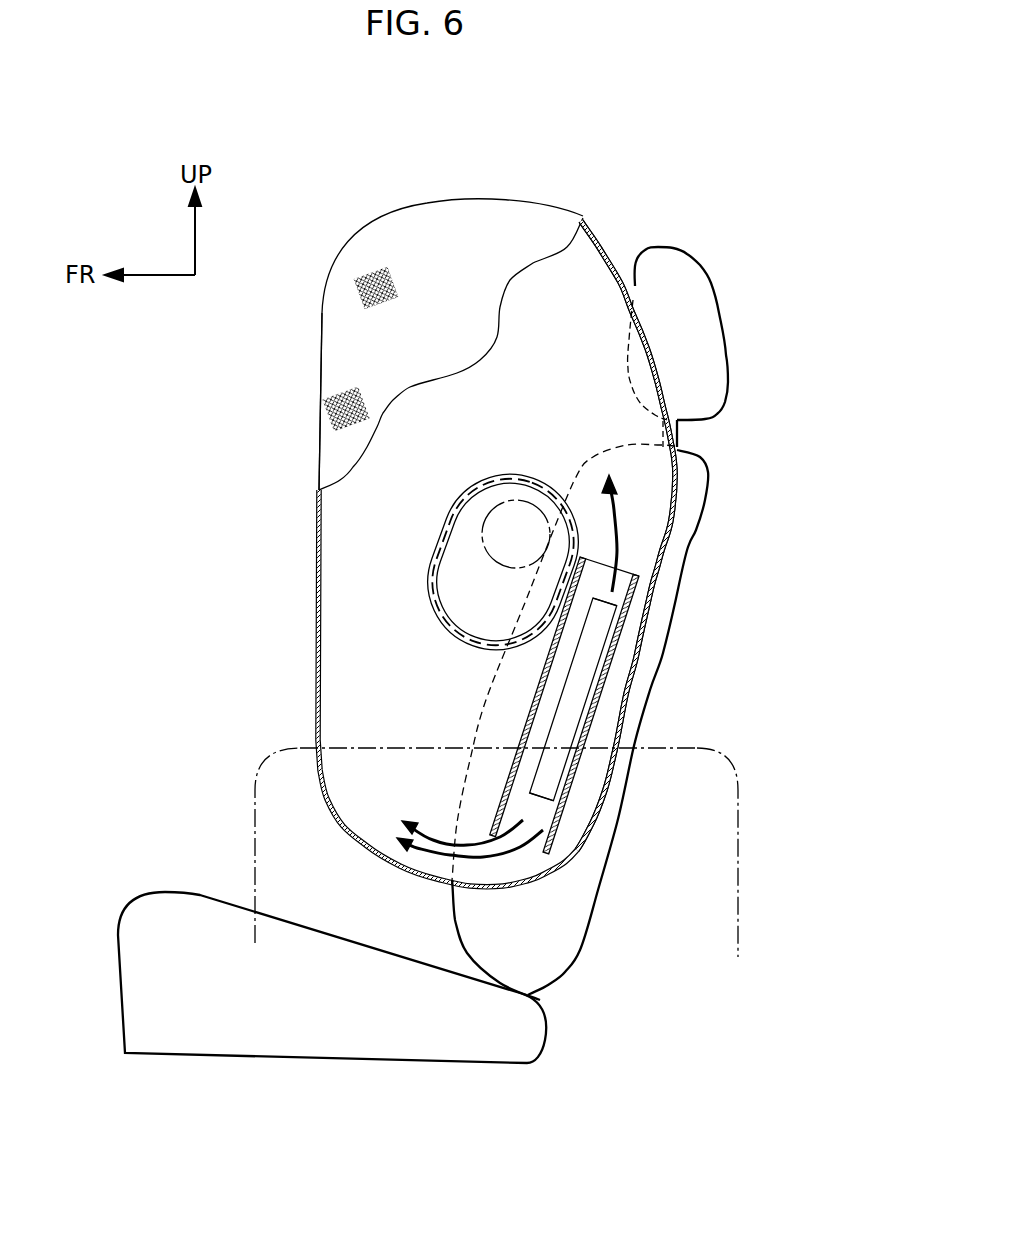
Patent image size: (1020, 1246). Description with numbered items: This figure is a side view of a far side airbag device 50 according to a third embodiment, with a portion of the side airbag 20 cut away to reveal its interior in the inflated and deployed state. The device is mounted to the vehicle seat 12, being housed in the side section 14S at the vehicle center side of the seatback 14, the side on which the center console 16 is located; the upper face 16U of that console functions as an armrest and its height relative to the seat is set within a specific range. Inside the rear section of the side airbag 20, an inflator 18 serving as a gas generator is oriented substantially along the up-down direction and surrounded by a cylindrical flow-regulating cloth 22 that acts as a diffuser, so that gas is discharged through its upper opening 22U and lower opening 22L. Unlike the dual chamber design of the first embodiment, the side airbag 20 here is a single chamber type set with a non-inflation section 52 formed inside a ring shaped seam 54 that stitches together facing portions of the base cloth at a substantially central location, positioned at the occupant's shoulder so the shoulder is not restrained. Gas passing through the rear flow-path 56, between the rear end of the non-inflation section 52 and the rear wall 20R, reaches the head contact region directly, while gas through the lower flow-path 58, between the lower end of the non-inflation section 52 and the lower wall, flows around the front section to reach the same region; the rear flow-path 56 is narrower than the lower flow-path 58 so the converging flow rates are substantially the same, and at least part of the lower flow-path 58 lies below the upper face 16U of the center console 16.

The vehicle seat 12 is at (563, 1036).
The seatback 14 is at (674, 571).
The side section 14S is at (597, 474).
The center console 16 is at (704, 745).
The upper face 16U is at (650, 745).
The inflator 18 is at (602, 605).
The side airbag 20 is at (314, 636).
The rear wall 20R is at (640, 643).
The flow-regulating cloth 22 is at (548, 733).
The upper opening 22U is at (640, 572).
The lower opening 22L is at (540, 845).
The far side airbag device 50 is at (256, 454).
The non-inflation section 52 is at (478, 600).
The seam 54 is at (447, 549).
The rear flow-path 56 is at (656, 556).
The lower flow-path 58 is at (463, 731).